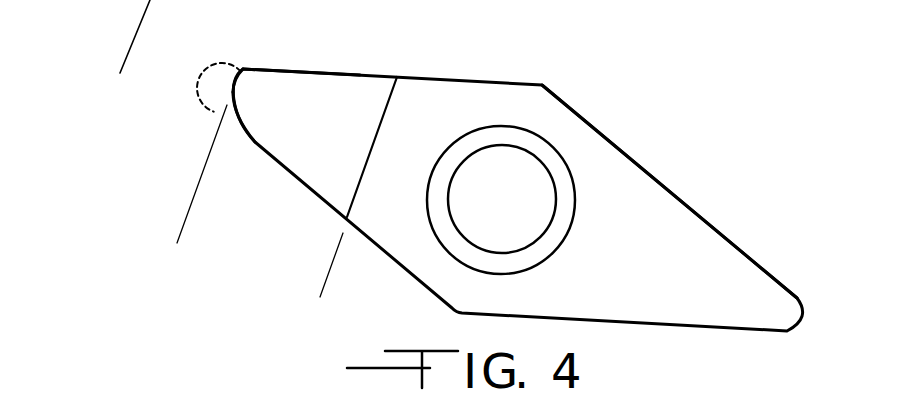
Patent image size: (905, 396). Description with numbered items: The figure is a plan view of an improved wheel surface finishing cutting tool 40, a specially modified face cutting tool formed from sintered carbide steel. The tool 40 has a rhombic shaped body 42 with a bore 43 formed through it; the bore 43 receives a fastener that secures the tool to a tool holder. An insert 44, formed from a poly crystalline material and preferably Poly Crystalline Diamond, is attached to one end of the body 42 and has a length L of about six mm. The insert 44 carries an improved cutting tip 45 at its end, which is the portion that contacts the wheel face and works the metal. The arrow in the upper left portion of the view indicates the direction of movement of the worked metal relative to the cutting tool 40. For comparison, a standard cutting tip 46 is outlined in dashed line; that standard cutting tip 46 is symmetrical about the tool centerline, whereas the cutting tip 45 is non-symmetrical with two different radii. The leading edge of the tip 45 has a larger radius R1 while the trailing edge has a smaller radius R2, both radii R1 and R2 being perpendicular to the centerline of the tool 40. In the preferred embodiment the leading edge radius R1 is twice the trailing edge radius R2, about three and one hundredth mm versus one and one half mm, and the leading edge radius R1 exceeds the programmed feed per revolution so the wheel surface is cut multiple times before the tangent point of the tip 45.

The cutting tool 40 is at (621, 85).
The rhombic shaped body 42 is at (690, 228).
The bore 43 is at (517, 210).
The insert 44 is at (359, 73).
The cutting tip 45 is at (255, 69).
The standard cutting tip 46 is at (192, 73).
The leading edge radius R1 is at (226, 108).
The trailing edge radius R2 is at (241, 66).
The length of insert L is at (177, 237).